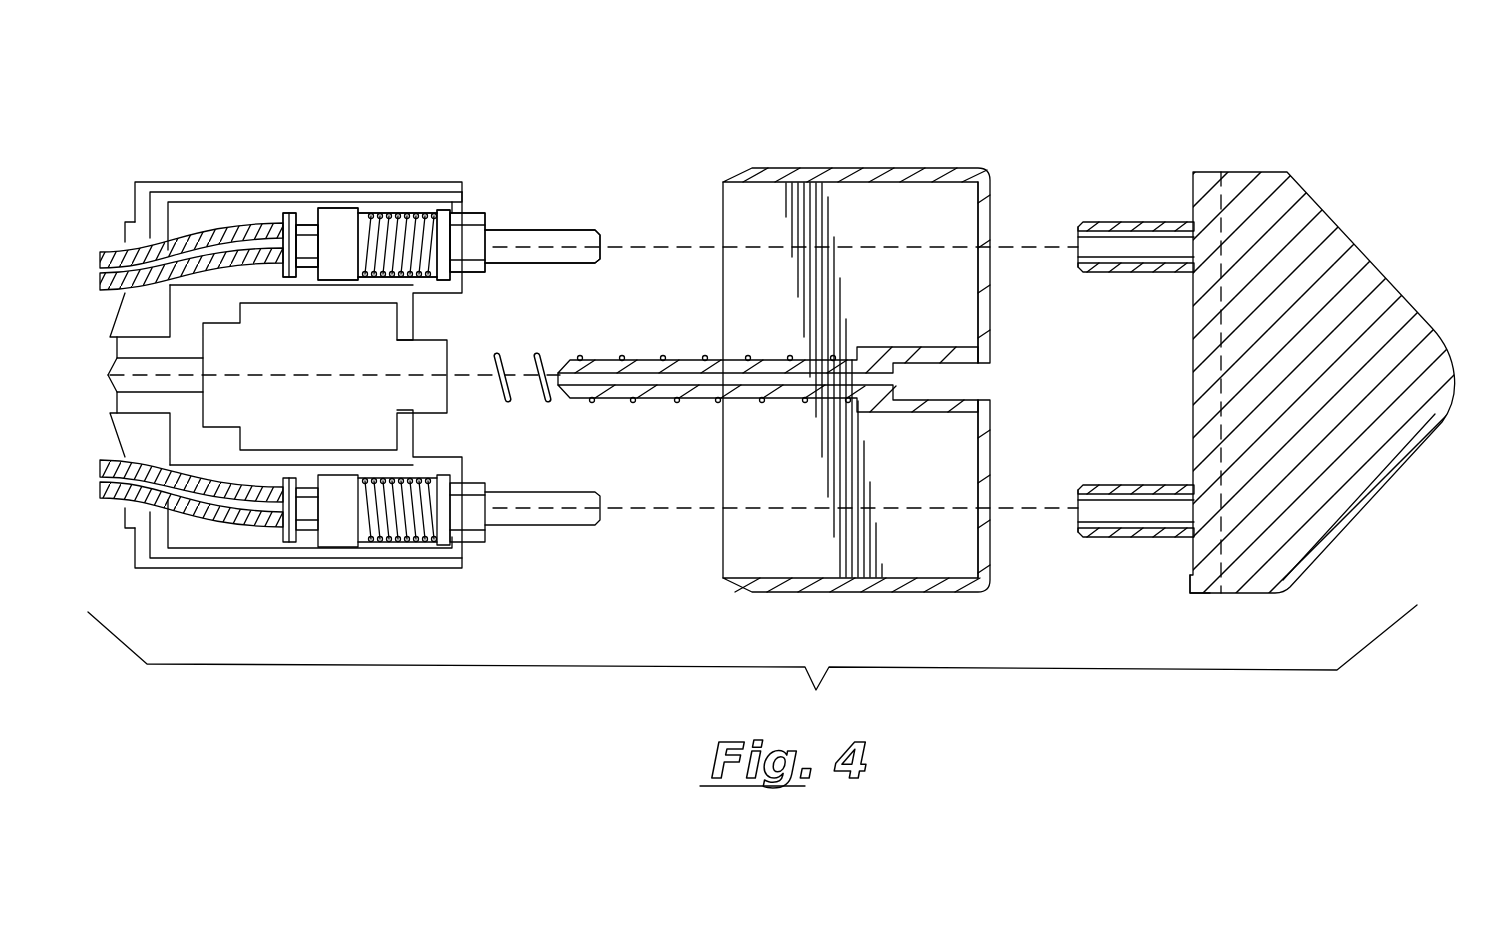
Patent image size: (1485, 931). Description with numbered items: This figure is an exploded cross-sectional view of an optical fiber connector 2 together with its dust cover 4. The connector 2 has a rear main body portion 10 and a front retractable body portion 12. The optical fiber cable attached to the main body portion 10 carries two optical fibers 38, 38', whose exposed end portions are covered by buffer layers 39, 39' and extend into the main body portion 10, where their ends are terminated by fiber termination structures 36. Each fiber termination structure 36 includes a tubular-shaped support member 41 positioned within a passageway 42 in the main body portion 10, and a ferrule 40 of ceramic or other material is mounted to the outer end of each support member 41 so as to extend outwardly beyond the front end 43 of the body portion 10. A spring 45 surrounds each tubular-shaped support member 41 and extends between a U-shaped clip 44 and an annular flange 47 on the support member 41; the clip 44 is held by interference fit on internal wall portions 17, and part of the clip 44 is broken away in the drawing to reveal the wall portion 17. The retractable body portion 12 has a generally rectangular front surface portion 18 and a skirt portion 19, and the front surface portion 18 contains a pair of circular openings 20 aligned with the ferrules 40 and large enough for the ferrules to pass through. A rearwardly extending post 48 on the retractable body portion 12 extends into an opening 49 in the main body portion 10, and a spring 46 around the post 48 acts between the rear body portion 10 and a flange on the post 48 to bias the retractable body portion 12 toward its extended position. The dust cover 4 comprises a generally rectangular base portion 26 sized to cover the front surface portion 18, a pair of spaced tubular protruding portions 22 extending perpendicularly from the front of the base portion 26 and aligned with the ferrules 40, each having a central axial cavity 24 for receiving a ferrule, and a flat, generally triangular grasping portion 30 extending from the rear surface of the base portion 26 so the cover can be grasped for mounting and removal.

The connector 2 is at (655, 122).
The dust cover 4 is at (1362, 200).
The main body portion 10 is at (251, 150).
The retractable body portion 12 is at (895, 140).
The internal wall portions 17 is at (337, 285).
The front surface portion 18 is at (988, 435).
The skirt portion 19 is at (772, 172).
The circular openings 20 is at (990, 250).
The protruding portions 22 is at (1122, 221).
The central axial cavity 24 is at (1151, 262).
The base portion 26 is at (1202, 577).
The grasping portion 30 is at (1383, 303).
The fiber termination structures 36 is at (340, 222).
The optical fiber 38 is at (191, 167).
The optical fiber 38' is at (191, 552).
The buffer layer 39 is at (191, 188).
The buffer layer 39' is at (191, 546).
The ferrule 40 is at (583, 235).
The tubular-shaped support member 41 is at (292, 212).
The passageway 42 is at (412, 206).
The front end 43 is at (464, 188).
The U-shaped clip 44 is at (333, 207).
The spring 45 is at (407, 263).
The spring 46 is at (642, 356).
The annular flange 47 is at (480, 228).
The post 48 is at (620, 402).
The opening 49 is at (187, 367).